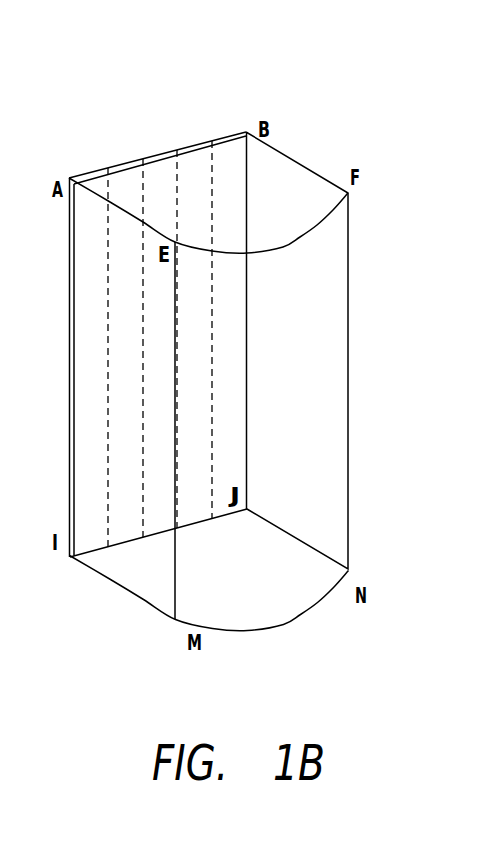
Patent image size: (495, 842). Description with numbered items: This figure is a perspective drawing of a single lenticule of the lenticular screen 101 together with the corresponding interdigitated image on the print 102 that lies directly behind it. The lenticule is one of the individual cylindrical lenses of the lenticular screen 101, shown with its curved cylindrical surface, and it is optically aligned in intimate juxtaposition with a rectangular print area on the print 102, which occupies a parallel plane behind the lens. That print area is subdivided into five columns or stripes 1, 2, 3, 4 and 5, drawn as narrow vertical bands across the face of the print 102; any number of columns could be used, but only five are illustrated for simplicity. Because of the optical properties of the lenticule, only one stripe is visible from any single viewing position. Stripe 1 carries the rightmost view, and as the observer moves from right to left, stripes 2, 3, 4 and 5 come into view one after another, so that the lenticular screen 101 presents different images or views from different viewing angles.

The lenticular screen 101 is at (295, 329).
The print 102 is at (156, 328).
The stripe 1 is at (99, 357).
The stripe 2 is at (130, 348).
The stripe 3 is at (166, 339).
The stripe 4 is at (201, 329).
The stripe 5 is at (231, 344).